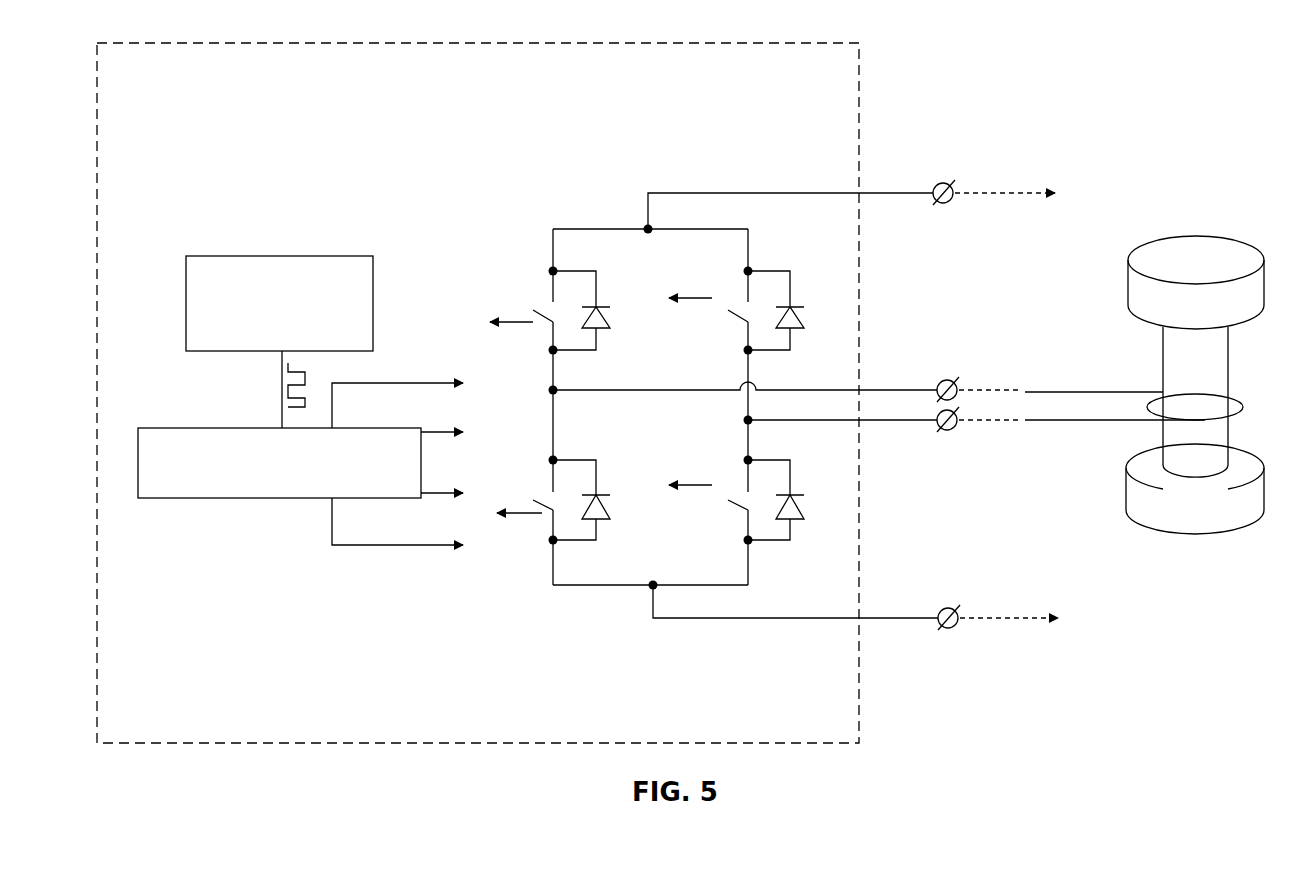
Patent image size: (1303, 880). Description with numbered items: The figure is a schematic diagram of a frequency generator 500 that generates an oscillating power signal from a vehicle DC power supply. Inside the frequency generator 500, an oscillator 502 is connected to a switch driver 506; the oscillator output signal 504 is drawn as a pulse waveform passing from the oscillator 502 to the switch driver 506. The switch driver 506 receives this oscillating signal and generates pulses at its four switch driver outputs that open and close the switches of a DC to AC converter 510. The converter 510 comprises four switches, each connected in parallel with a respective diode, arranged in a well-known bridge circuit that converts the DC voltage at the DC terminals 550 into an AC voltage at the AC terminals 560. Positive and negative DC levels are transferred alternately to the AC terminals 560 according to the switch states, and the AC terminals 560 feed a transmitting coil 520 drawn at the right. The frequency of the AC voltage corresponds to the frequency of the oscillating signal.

The frequency generator 500 is at (478, 393).
The oscillator 502 is at (279, 303).
The oscillator output signal 504 is at (275, 388).
The switch driver 506 is at (210, 490).
The DC to AC converter 510 is at (609, 222).
The transmitting coil 520 is at (1218, 250).
The DC terminals 550 is at (899, 183).
The AC terminals 560 is at (903, 378).